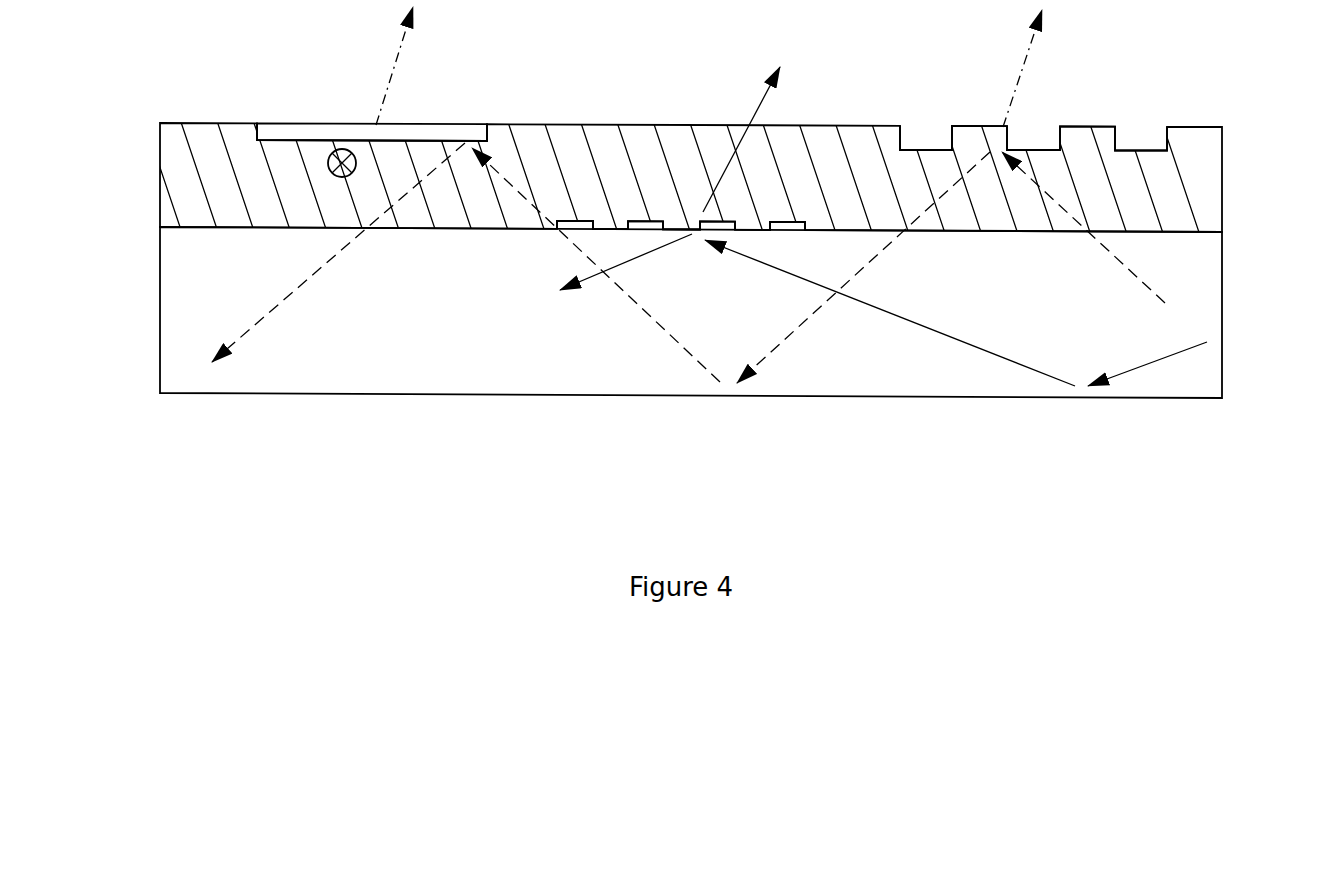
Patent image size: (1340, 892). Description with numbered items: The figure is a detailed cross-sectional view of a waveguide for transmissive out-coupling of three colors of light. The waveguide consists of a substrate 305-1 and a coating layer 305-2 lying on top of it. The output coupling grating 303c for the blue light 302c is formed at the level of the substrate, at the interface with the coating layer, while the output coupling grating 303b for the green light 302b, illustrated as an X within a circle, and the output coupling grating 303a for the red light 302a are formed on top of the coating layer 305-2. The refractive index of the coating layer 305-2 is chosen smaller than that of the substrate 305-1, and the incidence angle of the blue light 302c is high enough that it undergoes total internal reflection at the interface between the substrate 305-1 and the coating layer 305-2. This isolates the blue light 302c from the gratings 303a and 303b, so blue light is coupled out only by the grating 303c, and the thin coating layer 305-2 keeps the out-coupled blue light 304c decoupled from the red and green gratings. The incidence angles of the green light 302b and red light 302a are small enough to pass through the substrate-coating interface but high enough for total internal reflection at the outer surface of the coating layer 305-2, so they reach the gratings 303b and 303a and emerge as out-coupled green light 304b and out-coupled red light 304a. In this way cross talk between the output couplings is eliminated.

The red light 302a is at (1143, 278).
The green light 302b is at (342, 178).
The blue light 302c is at (1158, 363).
The output coupling grating for red light 303a is at (972, 117).
The output coupling grating for green light 303b is at (442, 125).
The output coupling grating for blue light 303c is at (643, 229).
The out-coupled red light 304a is at (1020, 78).
The out-coupled green light 304b is at (384, 87).
The out-coupled blue light 304c is at (752, 115).
The substrate 305-1 is at (160, 278).
The coating layer 305-2 is at (160, 144).